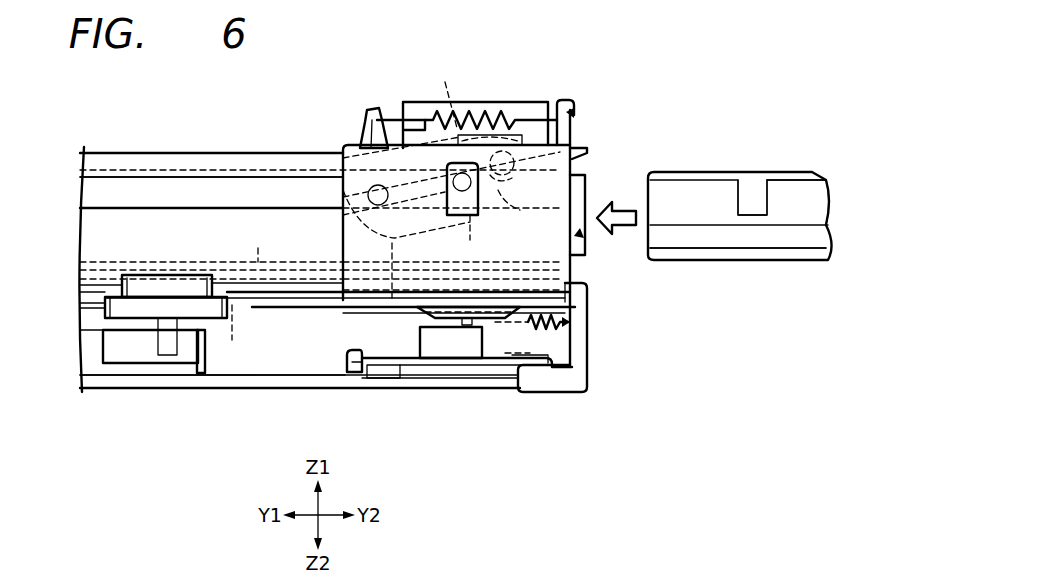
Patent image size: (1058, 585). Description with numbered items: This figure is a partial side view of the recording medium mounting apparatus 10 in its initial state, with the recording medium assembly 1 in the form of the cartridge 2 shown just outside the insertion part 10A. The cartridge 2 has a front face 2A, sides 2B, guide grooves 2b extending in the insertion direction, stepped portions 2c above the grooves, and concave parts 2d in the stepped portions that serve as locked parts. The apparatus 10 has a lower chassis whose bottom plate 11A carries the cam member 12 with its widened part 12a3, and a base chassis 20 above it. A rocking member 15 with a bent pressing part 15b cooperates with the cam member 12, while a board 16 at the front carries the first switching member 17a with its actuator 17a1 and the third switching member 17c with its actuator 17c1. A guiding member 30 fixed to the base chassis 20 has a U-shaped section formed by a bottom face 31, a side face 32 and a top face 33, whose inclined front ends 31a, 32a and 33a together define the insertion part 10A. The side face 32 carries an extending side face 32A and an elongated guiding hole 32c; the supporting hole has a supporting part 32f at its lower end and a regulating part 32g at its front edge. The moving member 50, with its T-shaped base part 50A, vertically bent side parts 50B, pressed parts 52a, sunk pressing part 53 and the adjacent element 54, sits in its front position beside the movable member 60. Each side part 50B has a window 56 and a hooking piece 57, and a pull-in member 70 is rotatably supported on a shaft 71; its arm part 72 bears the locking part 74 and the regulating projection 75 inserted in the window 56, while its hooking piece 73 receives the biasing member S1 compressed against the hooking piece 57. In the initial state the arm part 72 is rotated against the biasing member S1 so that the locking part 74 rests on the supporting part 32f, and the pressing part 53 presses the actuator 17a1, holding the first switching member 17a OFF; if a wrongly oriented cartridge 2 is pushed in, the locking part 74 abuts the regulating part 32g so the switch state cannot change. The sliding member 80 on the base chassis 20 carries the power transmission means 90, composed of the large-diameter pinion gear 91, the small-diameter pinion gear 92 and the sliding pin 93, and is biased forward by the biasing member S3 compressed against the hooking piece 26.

The card 1 is at (731, 167).
The cartridge 2 is at (690, 262).
The front face 2A is at (648, 235).
The sides 2B is at (823, 203).
The guide grooves 2b is at (752, 260).
The stepped portions 2c is at (806, 178).
The concave parts 2d is at (763, 205).
The recording medium mounting apparatus 10 is at (575, 54).
The insertion part 10A is at (583, 158).
The bottom plate 11A is at (280, 388).
The cam member 12 is at (207, 356).
The widened part 12a3 is at (112, 352).
The rocking member 15 is at (305, 375).
The pressing part 15b is at (350, 361).
The board 16 is at (495, 366).
The first switching member 17a is at (470, 346).
The actuator 17a1 is at (447, 333).
The third switching member 17c is at (385, 368).
The actuator 17c1 is at (352, 366).
The base chassis 20 is at (92, 285).
The hooking piece 26 is at (590, 340).
The guiding member 30 is at (286, 152).
The bottom face 31 is at (97, 259).
The inclined face 31a is at (585, 290).
The side face 32 is at (97, 229).
The extending side face 32A is at (532, 110).
The inclined face 32a is at (578, 275).
The elongated guiding hole 32c is at (193, 187).
The supporting part 32f is at (500, 181).
The regulating part 32g is at (435, 92).
The top face 33 is at (306, 160).
The inclined face 33a is at (592, 152).
The moving member 50 is at (582, 232).
The base part 50A is at (95, 306).
The side parts 50B is at (586, 196).
The pressed parts 52a is at (349, 257).
The pressing part 53 is at (538, 330).
The spring seat 54 is at (410, 310).
The windows 56 is at (471, 216).
The hooking pieces 57 is at (569, 103).
The movable member 60 is at (270, 310).
The pull-in member 70 is at (352, 237).
The shaft 71 is at (383, 205).
The arm part 72 is at (490, 214).
The hooking piece 73 is at (362, 133).
The locking part 74 is at (514, 172).
The regulating projection 75 is at (455, 216).
The sliding member 80 is at (262, 241).
The power transmission means 90 is at (160, 277).
The large-diameter pinion gear 91 is at (240, 333).
The small-diameter pinion gear 92 is at (216, 273).
The sliding pin 93 is at (170, 350).
The biasing member S1 is at (455, 114).
The biasing member S3 is at (586, 372).